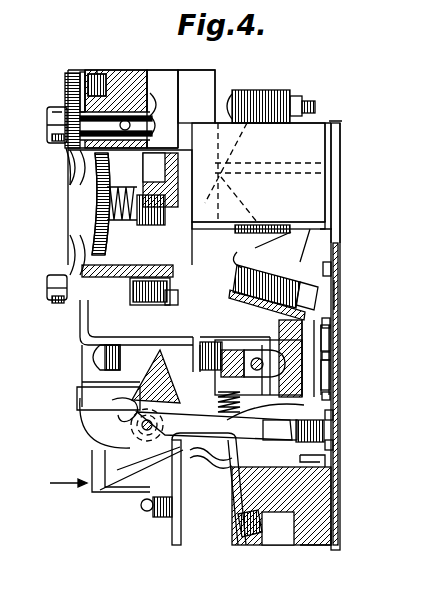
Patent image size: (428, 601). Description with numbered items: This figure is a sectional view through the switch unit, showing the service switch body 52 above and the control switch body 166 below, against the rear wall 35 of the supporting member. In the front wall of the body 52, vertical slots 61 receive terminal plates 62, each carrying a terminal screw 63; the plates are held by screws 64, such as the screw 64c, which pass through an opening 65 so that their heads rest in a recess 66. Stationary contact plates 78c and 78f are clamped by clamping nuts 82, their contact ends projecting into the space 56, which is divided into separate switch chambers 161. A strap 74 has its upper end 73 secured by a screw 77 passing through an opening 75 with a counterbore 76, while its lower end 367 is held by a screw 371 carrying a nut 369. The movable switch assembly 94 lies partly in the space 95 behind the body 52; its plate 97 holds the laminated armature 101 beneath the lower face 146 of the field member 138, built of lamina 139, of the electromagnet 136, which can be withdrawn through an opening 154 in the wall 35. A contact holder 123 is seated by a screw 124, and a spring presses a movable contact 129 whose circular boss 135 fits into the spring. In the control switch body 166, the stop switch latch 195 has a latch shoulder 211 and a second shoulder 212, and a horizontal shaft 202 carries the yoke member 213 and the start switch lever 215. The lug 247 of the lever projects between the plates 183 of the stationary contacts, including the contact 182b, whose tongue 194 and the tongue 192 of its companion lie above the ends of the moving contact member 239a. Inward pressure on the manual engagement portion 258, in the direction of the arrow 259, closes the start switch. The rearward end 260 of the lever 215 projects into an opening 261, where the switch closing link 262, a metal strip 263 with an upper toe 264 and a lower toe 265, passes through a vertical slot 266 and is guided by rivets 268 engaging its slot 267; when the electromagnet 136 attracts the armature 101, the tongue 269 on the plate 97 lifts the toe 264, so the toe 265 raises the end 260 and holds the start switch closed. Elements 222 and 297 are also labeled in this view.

The vertical slots 61 is at (97, 70).
The terminal plates 62 is at (82, 72).
The terminal screw 63 is at (67, 83).
The screw 64c is at (127, 70).
The opening 65 is at (148, 84).
The switch body 52 is at (193, 84).
The recess 66 is at (148, 105).
The screws 64 is at (152, 125).
The stationary contact plate 78c is at (65, 123).
The clamping nuts 82 is at (52, 138).
The lamina 139 is at (264, 90).
The field member 138 is at (287, 97).
The electromagnet 136 is at (297, 147).
The opening 154 is at (334, 182).
The lower face 146 is at (313, 232).
The space 95 is at (314, 240).
The laminated armature 101 is at (291, 263).
The screw 124 is at (265, 172).
The contact holder 123 is at (247, 231).
The movable switch assembly 94 is at (155, 178).
The opening or space 56 is at (98, 180).
The movable contact 129 is at (107, 207).
The circular boss 135 is at (115, 220).
The switch chambers 161 is at (115, 248).
The screws 77 is at (100, 288).
The stationary contact plate 78f is at (53, 302).
The counterbores 76 is at (163, 282).
The openings 75 is at (153, 298).
The upper end of strap 73 is at (82, 323).
The strap 74 is at (160, 333).
The latch shoulder 211 is at (175, 345).
The transverse wall or plate 97 is at (238, 305).
The stop switch latch 195 is at (100, 357).
The second shoulder 212 is at (156, 376).
The block 222 is at (93, 397).
The yoke member 213 is at (120, 398).
The arc 297 is at (78, 420).
The horizontal shaft 202 is at (133, 426).
The arrow 259 is at (49, 491).
The manual engagement portion 258 is at (100, 487).
The tongue 194 is at (148, 480).
The screw 371 is at (143, 513).
The nut 369 is at (165, 517).
The lower end of strap 367 is at (180, 515).
The stationary control contact member 182b is at (220, 520).
The moving contact member 239a is at (231, 540).
The control switch body 166 is at (316, 538).
The rear wall 35 is at (338, 507).
The vertical plates 183 is at (260, 500).
The lower toe 265 is at (307, 462).
The switch closing link 262 is at (337, 447).
The tongue 192 is at (324, 428).
The vertical slot 267 is at (341, 415).
The rearward end 260 is at (304, 407).
The opening 261 is at (337, 397).
The lug 247 is at (341, 370).
The rivets 268 is at (339, 358).
The start switch lever 215 is at (342, 335).
The vertical slot 266 is at (339, 323).
The strip of metal 263 is at (340, 300).
The tongue 269 is at (339, 290).
The upper toe 264 is at (326, 272).